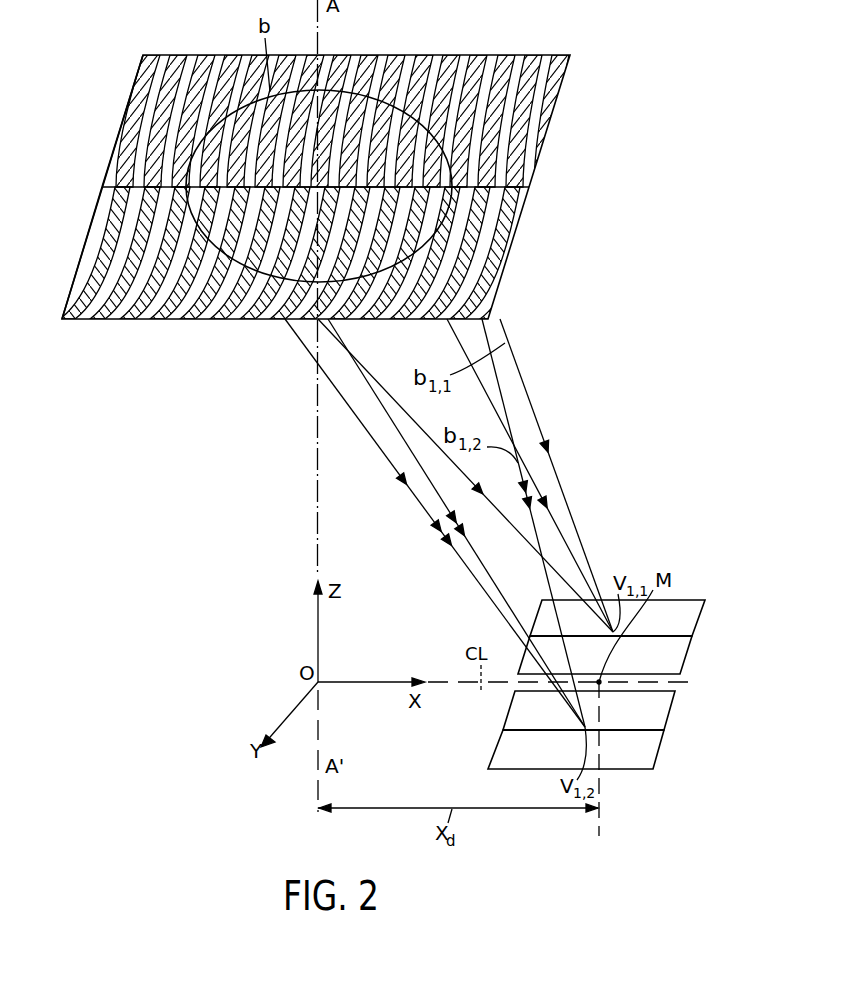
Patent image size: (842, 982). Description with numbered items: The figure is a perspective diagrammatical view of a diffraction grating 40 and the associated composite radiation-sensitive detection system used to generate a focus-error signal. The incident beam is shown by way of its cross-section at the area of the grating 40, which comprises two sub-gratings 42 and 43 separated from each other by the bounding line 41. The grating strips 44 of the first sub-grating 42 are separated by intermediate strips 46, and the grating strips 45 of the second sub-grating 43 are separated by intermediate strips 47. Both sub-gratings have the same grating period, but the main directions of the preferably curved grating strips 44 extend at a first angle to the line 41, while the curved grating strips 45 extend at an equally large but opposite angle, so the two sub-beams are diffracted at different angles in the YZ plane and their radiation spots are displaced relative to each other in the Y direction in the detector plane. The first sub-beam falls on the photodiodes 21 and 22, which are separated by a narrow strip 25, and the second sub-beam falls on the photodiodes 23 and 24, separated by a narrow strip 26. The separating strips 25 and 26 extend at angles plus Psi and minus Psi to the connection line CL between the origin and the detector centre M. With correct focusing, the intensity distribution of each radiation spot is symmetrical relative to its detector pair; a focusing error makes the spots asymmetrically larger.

The grating 40 is at (495, 50).
The line 41 is at (103, 186).
The sub-grating 42 is at (131, 90).
The sub-grating 43 is at (75, 280).
The grating strips 44 is at (366, 57).
The intermediate strips 46 is at (407, 68).
The grating strips 45 is at (183, 320).
The intermediate strips 47 is at (227, 320).
The photodiode 21 is at (692, 612).
The separating strip 25 is at (677, 630).
The photodiode 22 is at (673, 667).
The photodiode 23 is at (660, 704).
The separating strip 26 is at (650, 723).
The photodiode 24 is at (648, 757).